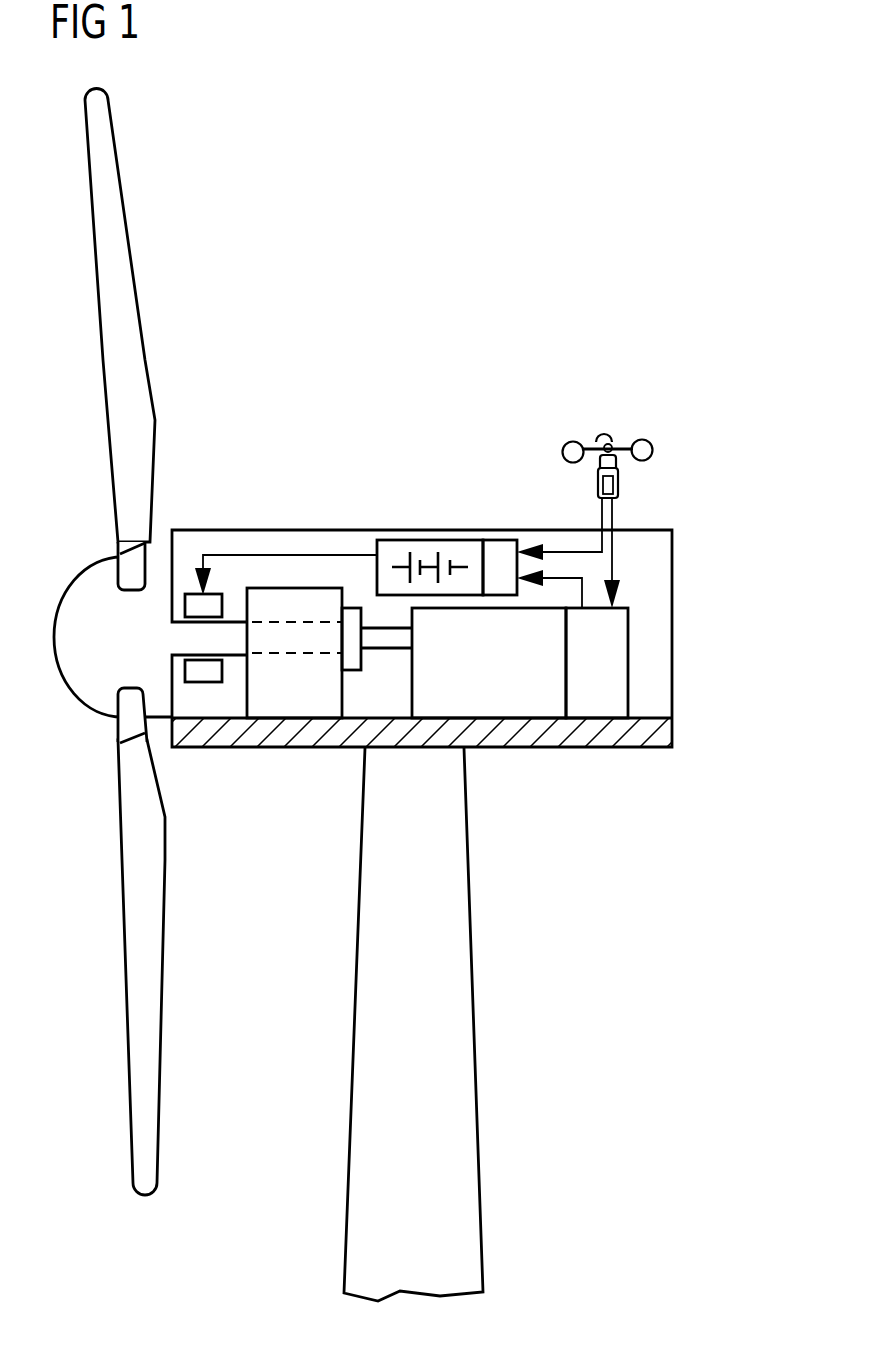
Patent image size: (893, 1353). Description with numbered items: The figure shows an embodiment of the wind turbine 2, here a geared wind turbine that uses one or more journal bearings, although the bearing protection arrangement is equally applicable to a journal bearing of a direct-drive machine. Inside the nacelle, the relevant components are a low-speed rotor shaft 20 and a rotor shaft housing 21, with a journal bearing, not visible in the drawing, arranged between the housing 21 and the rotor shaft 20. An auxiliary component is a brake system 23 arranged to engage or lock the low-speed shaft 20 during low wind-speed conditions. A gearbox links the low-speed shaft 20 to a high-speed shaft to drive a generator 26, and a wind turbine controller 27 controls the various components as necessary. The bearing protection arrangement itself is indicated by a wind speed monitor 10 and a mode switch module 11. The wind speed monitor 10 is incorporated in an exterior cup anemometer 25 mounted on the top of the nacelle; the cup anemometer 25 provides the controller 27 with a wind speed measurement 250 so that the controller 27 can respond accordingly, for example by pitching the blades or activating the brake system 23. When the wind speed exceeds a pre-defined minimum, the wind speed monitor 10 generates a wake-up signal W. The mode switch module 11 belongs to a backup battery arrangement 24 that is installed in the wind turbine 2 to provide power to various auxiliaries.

The wind turbine 2 is at (709, 441).
The wind speed monitor 10 is at (613, 485).
The mode switch module 11 is at (501, 550).
The low-speed rotor shaft 20 is at (228, 645).
The rotor shaft housing 21 is at (307, 603).
The brake system 23 is at (216, 606).
The backup battery arrangement 24 is at (396, 552).
The cup anemometer 25 is at (618, 442).
The generator 26 is at (510, 710).
The wind turbine controller 27 is at (602, 710).
The wind speed measurement 250 is at (615, 552).
The wake-up signal W is at (558, 552).